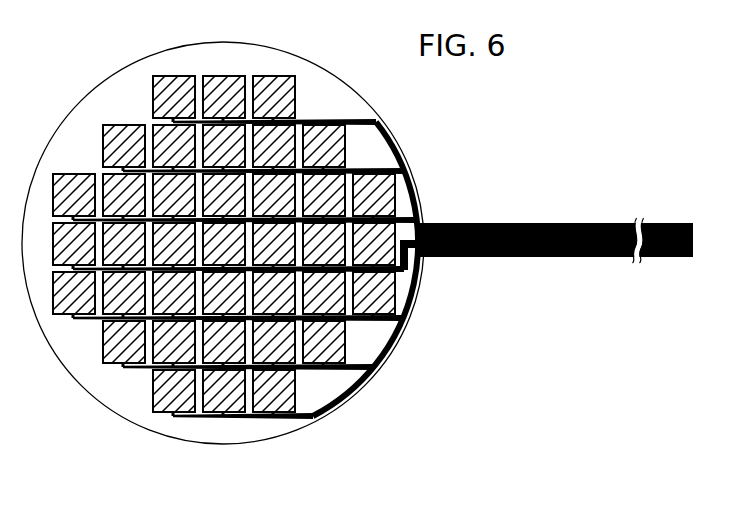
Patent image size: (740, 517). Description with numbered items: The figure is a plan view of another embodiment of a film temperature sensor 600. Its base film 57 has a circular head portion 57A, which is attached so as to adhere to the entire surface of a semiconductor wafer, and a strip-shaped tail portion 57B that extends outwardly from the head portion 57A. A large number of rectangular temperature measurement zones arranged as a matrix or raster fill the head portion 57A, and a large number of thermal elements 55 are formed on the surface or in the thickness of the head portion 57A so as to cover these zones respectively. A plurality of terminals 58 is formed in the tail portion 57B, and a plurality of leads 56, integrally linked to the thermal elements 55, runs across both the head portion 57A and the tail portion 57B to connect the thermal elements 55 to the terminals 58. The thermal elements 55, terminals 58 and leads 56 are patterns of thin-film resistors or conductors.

The film temperature sensor 600 is at (503, 116).
The thermal element 55 is at (343, 148).
The lead 56 is at (497, 222).
The base film 57 is at (70, 110).
The circular head portion 57A is at (415, 455).
The strip-shaped tail portion 57B is at (695, 275).
The terminal 58 is at (690, 213).